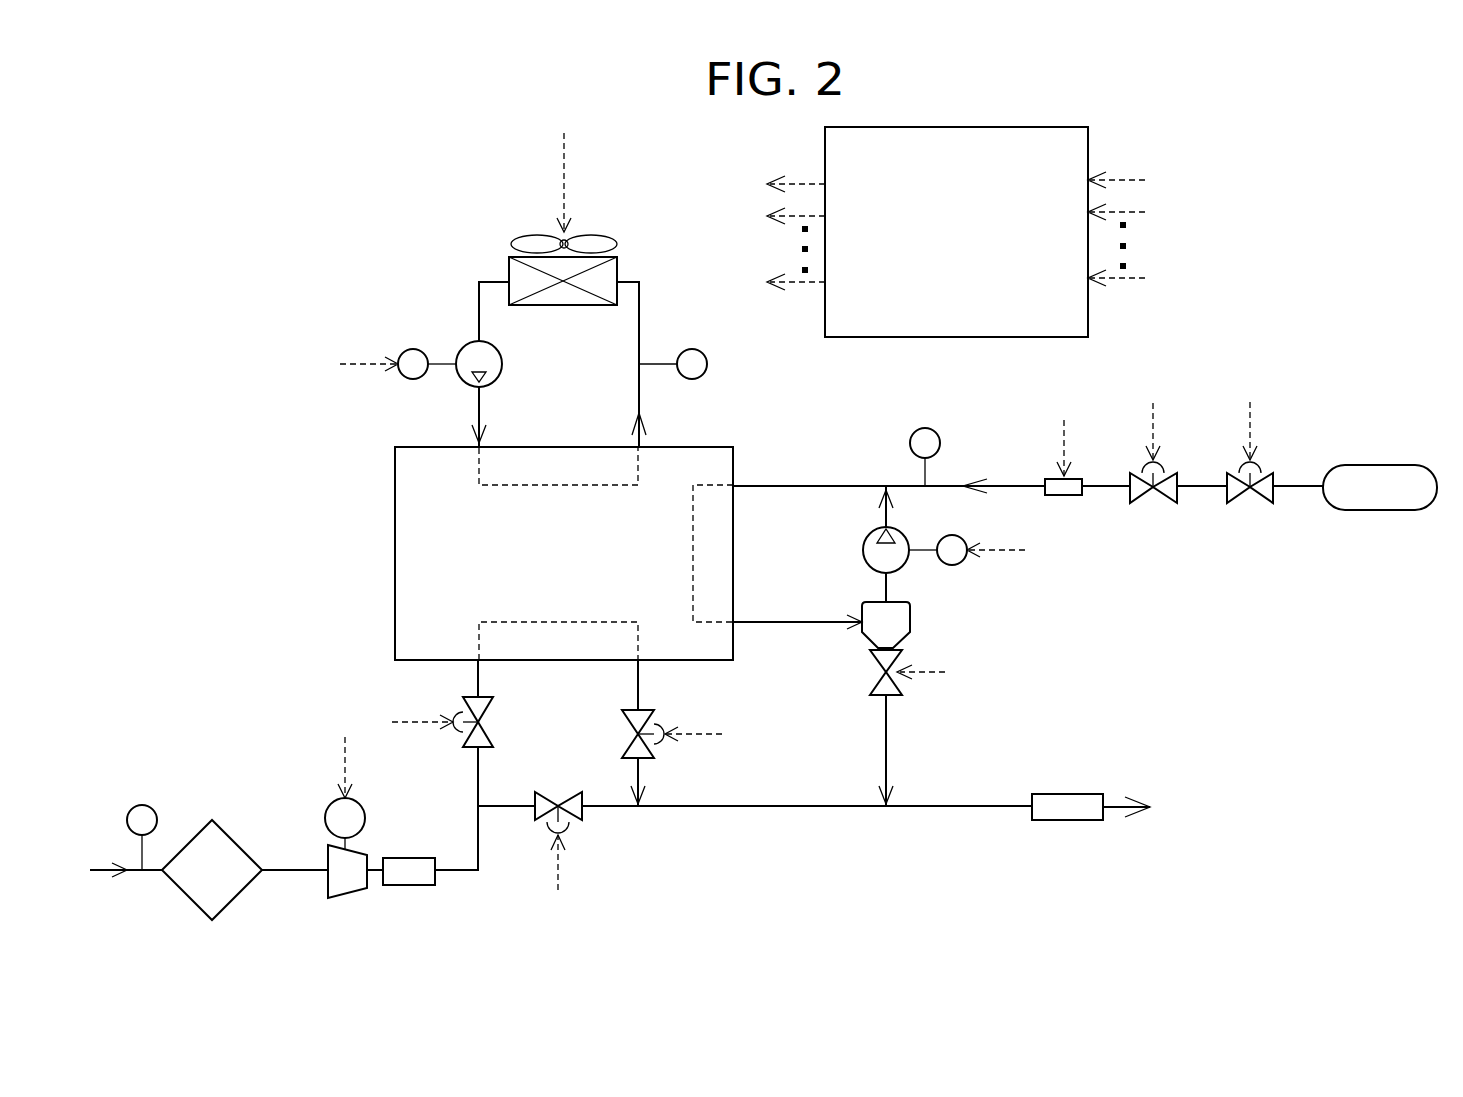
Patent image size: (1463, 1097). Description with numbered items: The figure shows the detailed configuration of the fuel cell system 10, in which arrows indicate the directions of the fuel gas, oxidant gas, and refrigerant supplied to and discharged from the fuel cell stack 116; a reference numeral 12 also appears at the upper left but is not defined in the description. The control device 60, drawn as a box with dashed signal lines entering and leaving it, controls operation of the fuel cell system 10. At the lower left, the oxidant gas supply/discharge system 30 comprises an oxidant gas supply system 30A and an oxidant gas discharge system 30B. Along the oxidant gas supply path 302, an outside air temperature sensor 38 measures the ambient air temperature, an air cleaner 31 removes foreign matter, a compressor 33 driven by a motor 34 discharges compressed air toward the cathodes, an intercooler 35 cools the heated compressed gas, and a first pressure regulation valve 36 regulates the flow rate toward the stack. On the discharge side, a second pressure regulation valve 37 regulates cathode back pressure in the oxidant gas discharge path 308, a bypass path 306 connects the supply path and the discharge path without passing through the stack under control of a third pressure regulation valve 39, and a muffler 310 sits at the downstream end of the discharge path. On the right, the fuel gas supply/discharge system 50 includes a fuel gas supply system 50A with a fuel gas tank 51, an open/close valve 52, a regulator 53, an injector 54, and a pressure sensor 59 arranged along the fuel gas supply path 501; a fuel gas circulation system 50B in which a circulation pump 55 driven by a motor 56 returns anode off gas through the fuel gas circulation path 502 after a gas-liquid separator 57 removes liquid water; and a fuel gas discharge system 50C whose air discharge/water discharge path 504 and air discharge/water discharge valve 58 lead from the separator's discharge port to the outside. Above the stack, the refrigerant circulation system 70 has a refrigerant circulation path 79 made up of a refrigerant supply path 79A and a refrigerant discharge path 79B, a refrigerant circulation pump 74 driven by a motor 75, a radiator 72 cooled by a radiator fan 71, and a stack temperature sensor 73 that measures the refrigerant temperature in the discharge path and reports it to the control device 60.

The vehicle 12 is at (297, 160).
The fuel cell system 10 is at (409, 178).
The refrigerant circulation system 70 is at (425, 242).
The radiator fan 71 is at (525, 240).
The radiator 72 is at (610, 262).
The stack temperature sensor 73 is at (702, 352).
The refrigerant circulation pump 74 is at (503, 364).
The motor 75 is at (424, 355).
The refrigerant circulation path 79 is at (648, 331).
The refrigerant supply path 79A is at (476, 302).
The refrigerant discharge path 79B is at (640, 402).
The fuel cell stack 116 is at (735, 447).
The control device 60 is at (1012, 127).
The fuel gas supply/discharge system 50 is at (1395, 393).
The fuel gas supply system 50A is at (1202, 578).
The fuel gas circulation system 50B is at (835, 555).
The fuel gas discharge system 50C is at (1000, 688).
The fuel gas tank 51 is at (1375, 465).
The open/close valve 52 is at (1260, 504).
The regulator 53 is at (1163, 504).
The injector 54 is at (1063, 496).
The circulation pump 55 is at (905, 565).
The motor 56 is at (960, 540).
The gas-liquid separator 57 is at (912, 615).
The air discharge/water discharge valve 58 is at (906, 690).
The pressure sensor 59 is at (935, 430).
The fuel gas supply path 501 is at (1005, 485).
The fuel gas circulation path 502 is at (790, 620).
The air discharge/water discharge path 504 is at (886, 750).
The oxidant gas supply/discharge system 30 is at (272, 690).
The oxidant gas supply system 30A is at (268, 808).
The oxidant gas discharge system 30B is at (690, 852).
The air cleaner 31 is at (193, 840).
The compressor 33 is at (327, 888).
The motor 34 is at (330, 805).
The intercooler 35 is at (388, 890).
The first pressure regulation valve 36 is at (465, 712).
The second pressure regulation valve 37 is at (625, 725).
The outside air temperature sensor 38 is at (135, 805).
The third pressure regulation valve 39 is at (552, 824).
The oxidant gas supply path 302 is at (450, 877).
The bypass path 306 is at (606, 812).
The oxidant gas discharge path 308 is at (640, 685).
The muffler 310 is at (1065, 793).